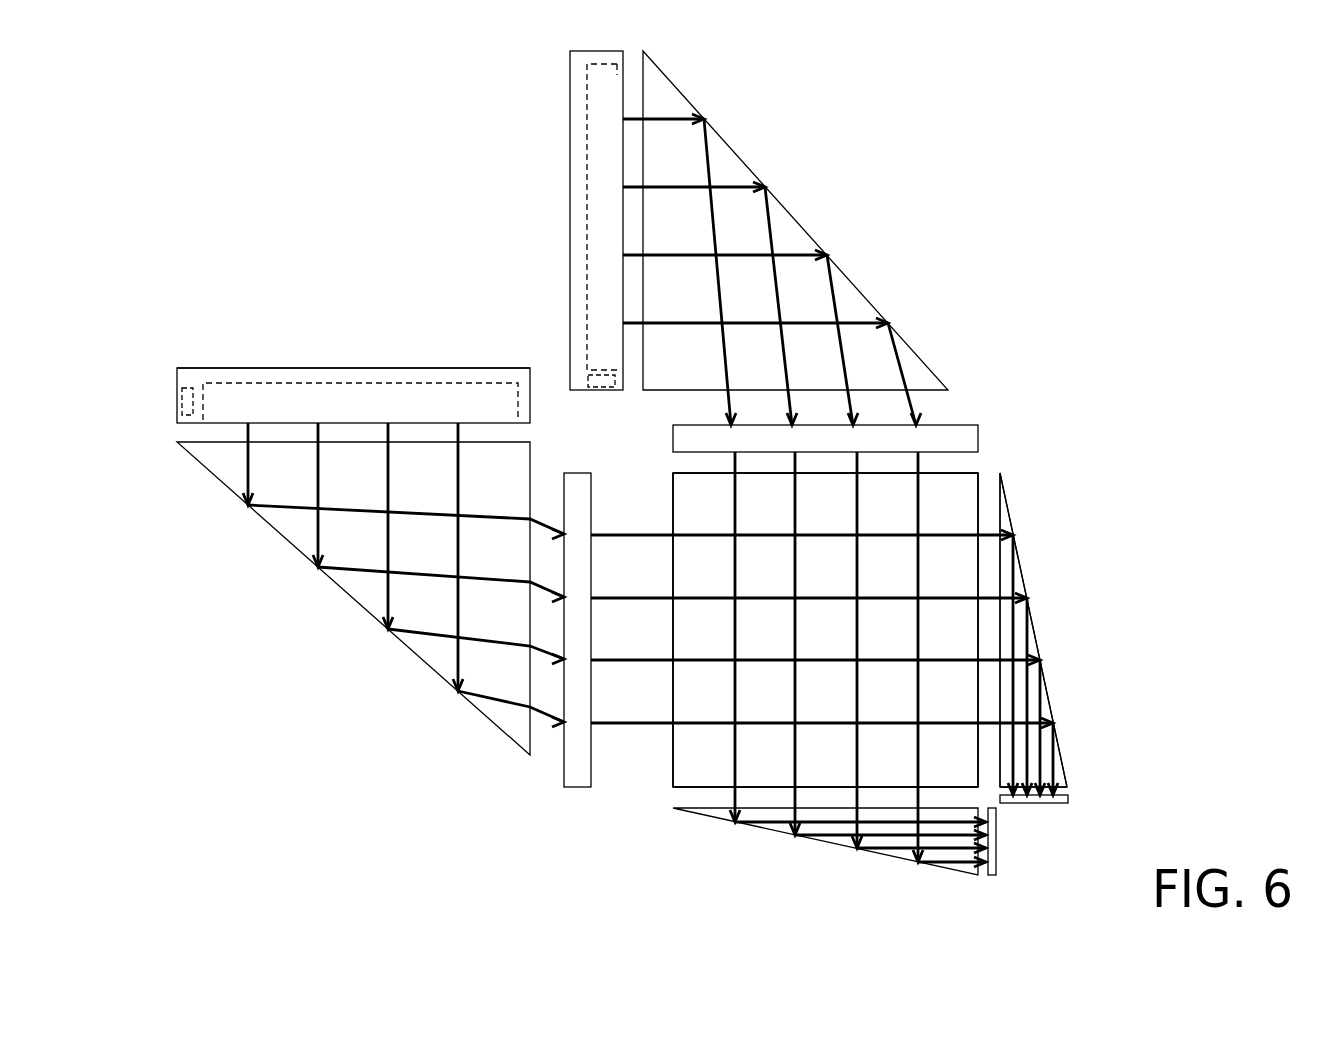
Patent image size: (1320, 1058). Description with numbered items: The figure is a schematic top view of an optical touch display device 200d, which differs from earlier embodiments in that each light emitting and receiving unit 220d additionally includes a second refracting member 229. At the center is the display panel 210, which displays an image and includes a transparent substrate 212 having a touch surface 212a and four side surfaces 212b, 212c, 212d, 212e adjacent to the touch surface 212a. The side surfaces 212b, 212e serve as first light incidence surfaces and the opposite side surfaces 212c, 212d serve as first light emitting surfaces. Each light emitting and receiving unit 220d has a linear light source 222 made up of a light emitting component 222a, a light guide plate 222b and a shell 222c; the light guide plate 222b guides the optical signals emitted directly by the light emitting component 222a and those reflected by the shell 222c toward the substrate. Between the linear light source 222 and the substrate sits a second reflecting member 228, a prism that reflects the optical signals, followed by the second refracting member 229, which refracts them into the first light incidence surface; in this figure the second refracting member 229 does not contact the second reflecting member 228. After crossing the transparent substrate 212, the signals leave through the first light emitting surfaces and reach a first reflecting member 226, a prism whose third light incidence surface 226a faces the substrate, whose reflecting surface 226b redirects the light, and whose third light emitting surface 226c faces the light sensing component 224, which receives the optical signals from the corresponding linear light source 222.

The optical touch display device 200d is at (1208, 802).
The display panel 210 is at (857, 647).
The transparent substrate 212 is at (975, 478).
The touch surface 212a is at (964, 507).
The side surface (first light incidence surface) 212b is at (673, 755).
The side surface (first light emitting surface) 212c is at (890, 788).
The side surface (first light emitting surface) 212d is at (980, 690).
The side surface (first light incidence surface) 212e is at (945, 430).
The light emitting and receiving unit 220d is at (671, 458).
The linear light source 222 is at (397, 303).
The light emitting component 222a is at (196, 386).
The light guide plate 222b is at (287, 383).
The shell 222c is at (360, 368).
The light sensing component 224 is at (1050, 806).
The first reflecting member 226 is at (1020, 558).
The third light incidence surface 226a is at (1000, 630).
The reflecting surface 226b is at (1040, 660).
The third light emitting surface 226c is at (1063, 783).
The second reflecting member 228 is at (782, 222).
The second refracting member 229 is at (947, 470).